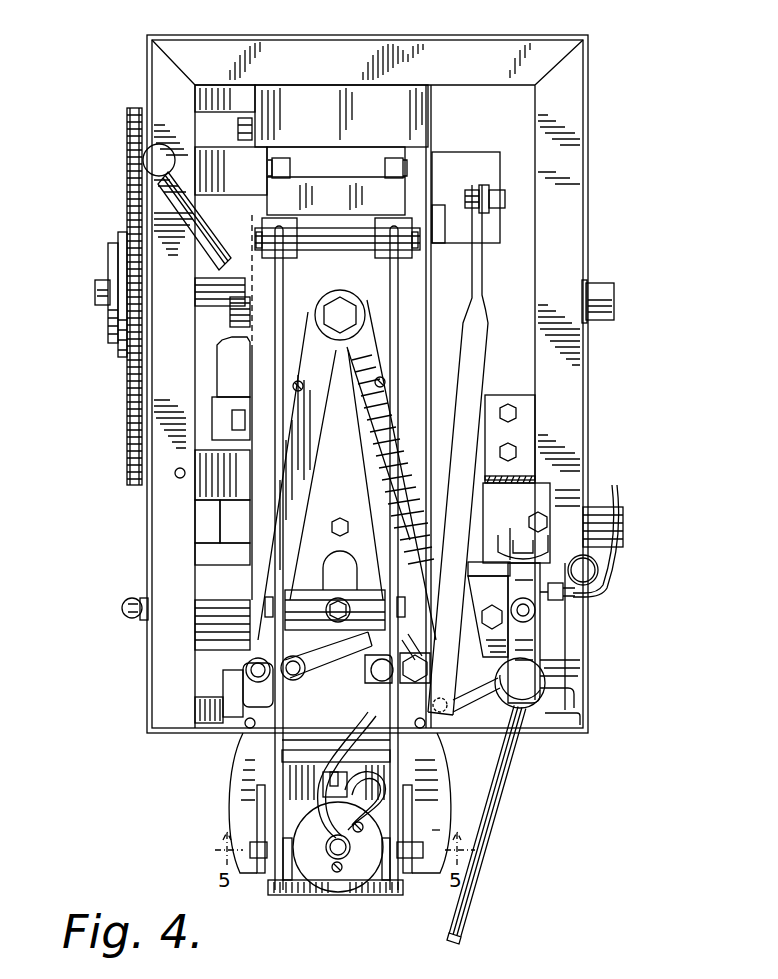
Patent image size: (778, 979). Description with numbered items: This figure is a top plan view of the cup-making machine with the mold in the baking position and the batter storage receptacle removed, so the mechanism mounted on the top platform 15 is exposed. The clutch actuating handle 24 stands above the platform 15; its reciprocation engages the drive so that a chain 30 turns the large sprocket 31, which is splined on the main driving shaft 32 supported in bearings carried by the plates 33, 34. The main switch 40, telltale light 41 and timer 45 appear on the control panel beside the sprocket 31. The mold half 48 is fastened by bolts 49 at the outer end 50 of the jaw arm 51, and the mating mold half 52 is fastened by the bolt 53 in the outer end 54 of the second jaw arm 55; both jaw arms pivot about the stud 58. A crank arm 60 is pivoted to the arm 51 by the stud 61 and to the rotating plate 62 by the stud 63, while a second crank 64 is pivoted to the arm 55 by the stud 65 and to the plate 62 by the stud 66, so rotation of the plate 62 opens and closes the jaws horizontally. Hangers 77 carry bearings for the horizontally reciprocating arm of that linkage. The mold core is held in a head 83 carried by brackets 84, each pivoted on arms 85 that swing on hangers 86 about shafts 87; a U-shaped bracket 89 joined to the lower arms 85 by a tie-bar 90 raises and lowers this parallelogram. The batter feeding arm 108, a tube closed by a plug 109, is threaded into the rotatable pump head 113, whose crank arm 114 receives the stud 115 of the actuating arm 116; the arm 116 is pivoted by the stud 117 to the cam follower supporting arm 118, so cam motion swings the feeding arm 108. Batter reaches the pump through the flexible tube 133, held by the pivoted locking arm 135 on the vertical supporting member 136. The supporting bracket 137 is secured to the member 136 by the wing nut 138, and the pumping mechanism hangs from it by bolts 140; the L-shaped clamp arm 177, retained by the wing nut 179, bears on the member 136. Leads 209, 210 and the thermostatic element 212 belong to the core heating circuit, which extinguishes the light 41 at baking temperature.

The top platform 15 is at (322, 90).
The actuating handle 24 is at (150, 188).
The chain 30 is at (128, 220).
The large sprocket 31 is at (118, 352).
The main driving shaft 32 is at (95, 294).
The plate 33 is at (247, 322).
The plate 34 is at (437, 205).
The main switch 40 is at (128, 618).
The telltale light 41 is at (128, 600).
The timer 45 is at (235, 663).
The mold half 48 is at (305, 898).
The bolts 49 is at (245, 868).
The outer end of jaw arm 50 is at (240, 798).
The jaw arm 51 is at (337, 438).
The mating mold half 52 is at (375, 898).
The bolt 53 is at (432, 835).
The outer end of second jaw arm 54 is at (438, 803).
The second jaw arm 55 is at (400, 508).
The stud 58 is at (345, 308).
The crank arm 60 is at (312, 720).
The stud 61 is at (200, 695).
The plate 62 is at (300, 640).
The stud 63 is at (378, 683).
The crank 64 is at (419, 636).
The stud 65 is at (414, 682).
The stud 66 is at (322, 665).
The hangers 77 is at (253, 135).
The head 83 is at (352, 898).
The brackets 84 is at (283, 895).
The arms 85 is at (283, 296).
The hangers 86 is at (368, 228).
The shafts 87 is at (344, 250).
The U-shaped bracket 89 is at (355, 590).
The tie-bar 90 is at (310, 620).
The batter feeding arm 108 is at (490, 818).
The plug 109 is at (462, 933).
The pump head 113 is at (540, 685).
The crank arm 114 is at (462, 740).
The pivotal mounting stud 115 is at (443, 712).
The actuating arm 116 is at (483, 358).
The stud 117 is at (507, 198).
The cam follower supporting arm 118 is at (495, 188).
The flexible tube 133 is at (598, 570).
The pivoted locking arm 135 is at (610, 490).
The vertical supporting member 136 is at (476, 565).
The supporting bracket 137 is at (548, 645).
The wing nut 138 is at (543, 525).
The bolts 140 is at (491, 617).
The clamp arm 177 is at (576, 697).
The wing nut 179 is at (565, 600).
The lead 209 is at (345, 852).
The lead 210 is at (350, 835).
The thermostatic element 212 is at (362, 770).